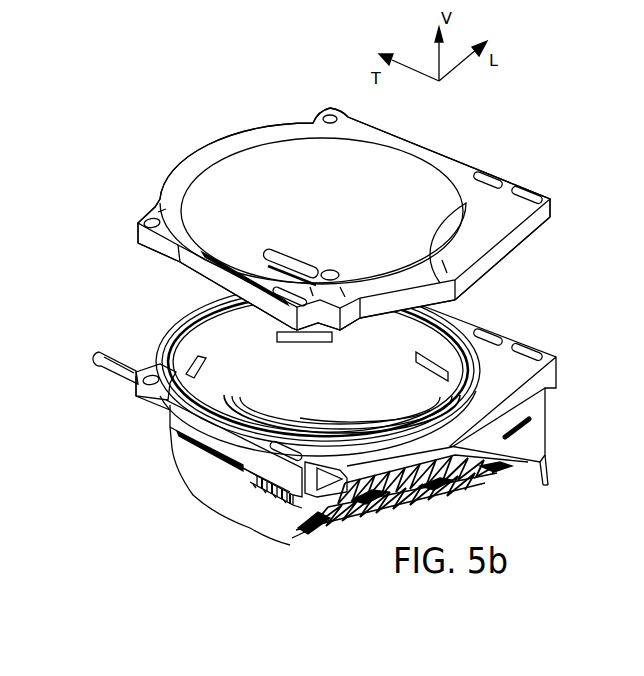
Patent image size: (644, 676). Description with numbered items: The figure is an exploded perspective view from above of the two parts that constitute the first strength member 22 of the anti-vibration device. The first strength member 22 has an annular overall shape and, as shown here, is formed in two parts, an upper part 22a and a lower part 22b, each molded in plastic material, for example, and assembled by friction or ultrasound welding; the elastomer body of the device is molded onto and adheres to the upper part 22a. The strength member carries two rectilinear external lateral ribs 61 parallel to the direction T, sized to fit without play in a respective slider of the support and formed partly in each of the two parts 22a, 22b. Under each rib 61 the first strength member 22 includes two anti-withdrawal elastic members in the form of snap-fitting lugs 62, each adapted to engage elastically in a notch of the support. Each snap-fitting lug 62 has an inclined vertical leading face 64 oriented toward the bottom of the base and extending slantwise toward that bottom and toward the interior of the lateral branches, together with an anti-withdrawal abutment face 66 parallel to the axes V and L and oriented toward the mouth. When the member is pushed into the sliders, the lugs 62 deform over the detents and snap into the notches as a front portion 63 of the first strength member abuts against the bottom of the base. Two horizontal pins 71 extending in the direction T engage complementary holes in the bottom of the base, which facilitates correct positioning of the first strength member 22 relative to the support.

The first strength member 22 is at (128, 316).
The upper part 22a is at (552, 207).
The lower part 22b is at (542, 470).
The external lateral rib 61 is at (240, 457).
The snap-fitting lug 62 is at (246, 494).
The front portion 63 is at (181, 322).
The inclined vertical leading face 64 is at (253, 487).
The anti-withdrawal abutment face 66 is at (263, 497).
The horizontal pin 71 is at (113, 376).